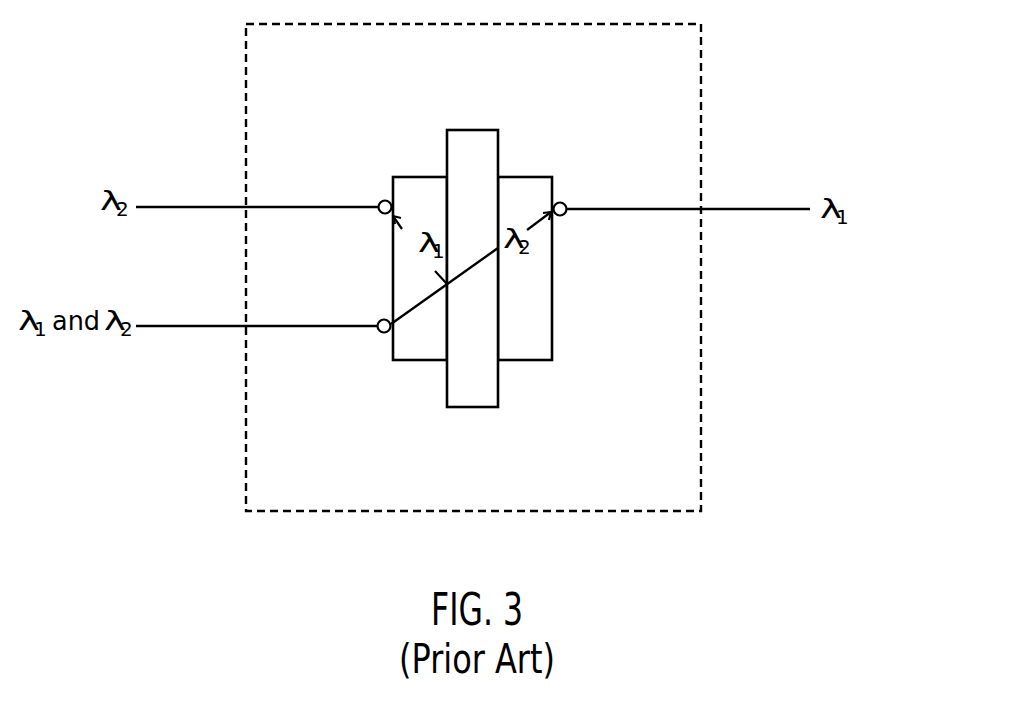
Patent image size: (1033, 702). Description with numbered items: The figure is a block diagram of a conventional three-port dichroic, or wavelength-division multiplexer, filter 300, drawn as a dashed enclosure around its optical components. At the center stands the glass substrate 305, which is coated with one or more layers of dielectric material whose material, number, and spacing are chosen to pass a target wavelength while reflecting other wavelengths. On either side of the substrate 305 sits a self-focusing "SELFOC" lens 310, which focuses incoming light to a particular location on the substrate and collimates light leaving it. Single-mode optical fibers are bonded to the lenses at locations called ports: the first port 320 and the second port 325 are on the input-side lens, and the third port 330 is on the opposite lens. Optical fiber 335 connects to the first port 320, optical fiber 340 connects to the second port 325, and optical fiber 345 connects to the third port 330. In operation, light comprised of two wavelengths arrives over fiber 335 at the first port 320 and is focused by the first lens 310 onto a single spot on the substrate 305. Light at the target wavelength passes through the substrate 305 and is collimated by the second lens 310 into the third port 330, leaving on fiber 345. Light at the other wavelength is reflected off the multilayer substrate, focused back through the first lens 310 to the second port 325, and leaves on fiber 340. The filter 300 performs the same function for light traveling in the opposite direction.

The three-port dichroic filter 300 is at (256, 511).
The substrate 305 is at (447, 386).
The SELFOC lens 310 is at (572, 400).
The port 1 320 is at (377, 323).
The port 2 325 is at (378, 205).
The port 3 330 is at (567, 213).
The optical fiber 335 is at (200, 326).
The optical fiber 340 is at (200, 207).
The optical fiber 345 is at (742, 209).